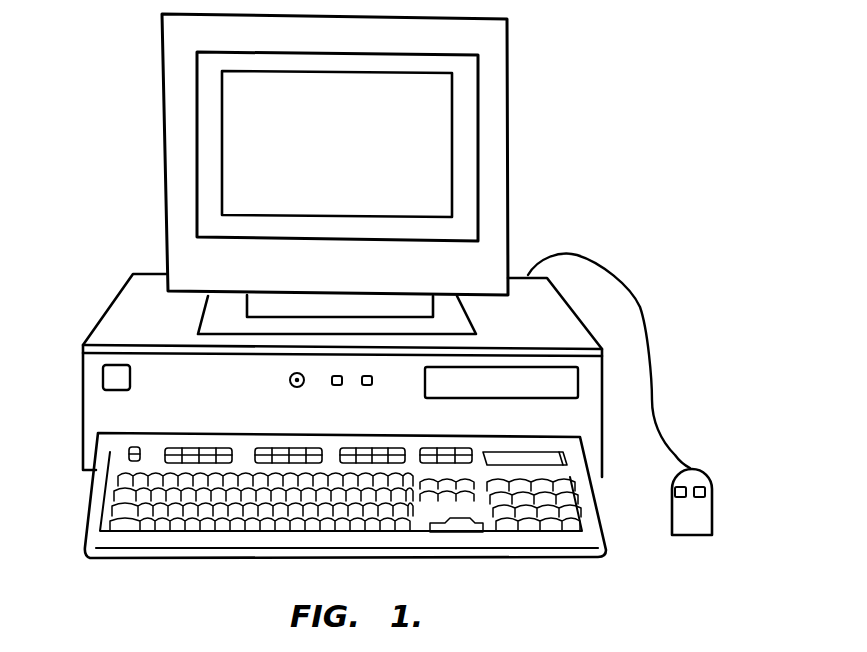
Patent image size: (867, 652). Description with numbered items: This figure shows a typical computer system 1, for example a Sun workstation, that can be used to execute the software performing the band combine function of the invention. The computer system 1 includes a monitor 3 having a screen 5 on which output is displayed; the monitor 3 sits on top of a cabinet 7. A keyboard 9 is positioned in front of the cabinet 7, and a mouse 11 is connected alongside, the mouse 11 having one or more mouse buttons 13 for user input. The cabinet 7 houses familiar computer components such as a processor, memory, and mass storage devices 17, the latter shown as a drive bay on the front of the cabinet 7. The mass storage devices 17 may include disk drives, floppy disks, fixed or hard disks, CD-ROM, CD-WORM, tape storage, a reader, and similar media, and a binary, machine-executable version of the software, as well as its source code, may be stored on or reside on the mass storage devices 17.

The computer system 1 is at (662, 41).
The monitor 3 is at (508, 125).
The screen 5 is at (417, 113).
The cabinet 7 is at (552, 325).
The keyboard 9 is at (295, 557).
The mouse 11 is at (700, 517).
The mouse buttons 13 is at (682, 486).
The mass storage devices 17 is at (565, 383).